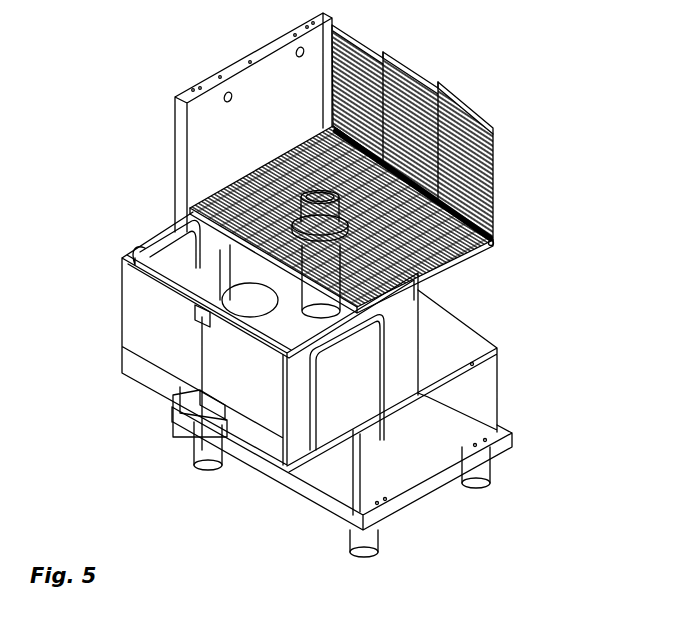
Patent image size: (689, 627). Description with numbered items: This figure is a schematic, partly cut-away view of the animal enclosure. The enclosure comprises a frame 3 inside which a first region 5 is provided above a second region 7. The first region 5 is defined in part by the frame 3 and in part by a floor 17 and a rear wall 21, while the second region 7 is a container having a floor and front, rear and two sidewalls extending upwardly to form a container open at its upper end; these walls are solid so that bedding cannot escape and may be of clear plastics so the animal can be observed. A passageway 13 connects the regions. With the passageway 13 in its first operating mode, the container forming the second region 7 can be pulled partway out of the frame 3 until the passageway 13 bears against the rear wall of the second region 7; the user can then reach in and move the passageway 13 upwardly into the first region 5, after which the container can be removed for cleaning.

The frame 3 is at (183, 160).
The first region 5 is at (462, 145).
The rear wall 21 is at (407, 67).
The floor 17 is at (443, 243).
The passageway 13 is at (320, 297).
The second region 7 is at (398, 318).